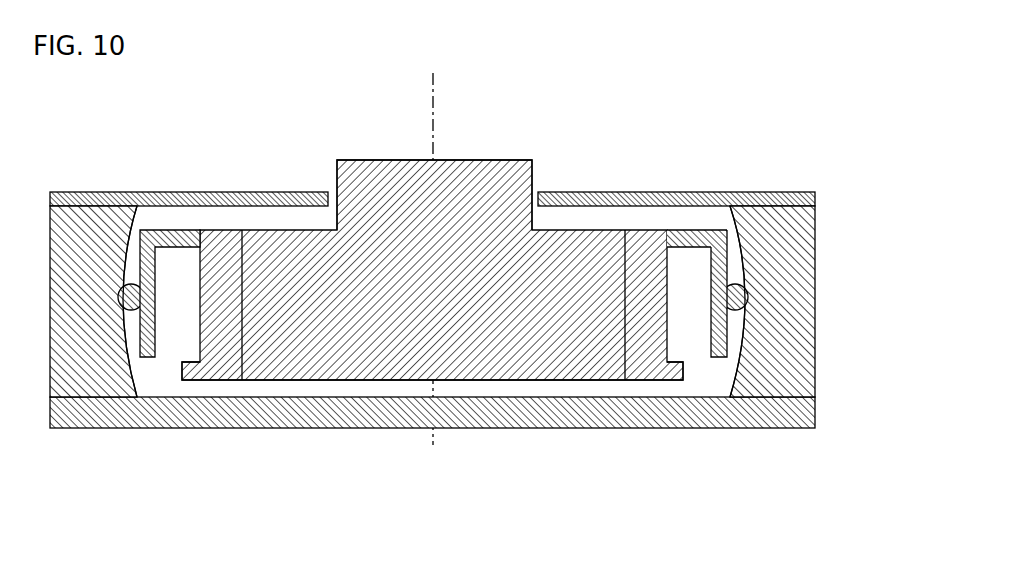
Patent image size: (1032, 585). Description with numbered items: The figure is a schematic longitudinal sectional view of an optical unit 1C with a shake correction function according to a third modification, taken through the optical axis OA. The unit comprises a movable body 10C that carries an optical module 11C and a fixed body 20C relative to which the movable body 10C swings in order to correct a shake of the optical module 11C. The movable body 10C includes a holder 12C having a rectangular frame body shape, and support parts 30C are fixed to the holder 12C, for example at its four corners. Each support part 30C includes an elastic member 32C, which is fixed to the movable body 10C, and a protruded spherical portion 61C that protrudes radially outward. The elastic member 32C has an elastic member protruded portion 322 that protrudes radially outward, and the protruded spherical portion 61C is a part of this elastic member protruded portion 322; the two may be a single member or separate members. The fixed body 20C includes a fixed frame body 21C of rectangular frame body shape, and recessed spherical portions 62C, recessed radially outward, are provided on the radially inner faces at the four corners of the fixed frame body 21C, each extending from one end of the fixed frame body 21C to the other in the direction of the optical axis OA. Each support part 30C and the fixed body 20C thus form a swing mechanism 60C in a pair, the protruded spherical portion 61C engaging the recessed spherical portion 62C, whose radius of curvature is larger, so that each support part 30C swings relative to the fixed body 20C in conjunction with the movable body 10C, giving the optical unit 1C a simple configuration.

The optical axis OA is at (437, 92).
The optical unit with a shake correction function 1C is at (758, 139).
The movable body 10C is at (534, 157).
The optical module 11C is at (403, 185).
The holder 12C is at (643, 362).
The fixed body 20C is at (825, 231).
The fixed frame body 21C is at (815, 333).
The support part 30C is at (701, 228).
The elastic member 32C is at (678, 231).
The elastic member protruded portion 322 is at (727, 305).
The swing mechanism 60C is at (738, 262).
The protruded spherical portion 61C is at (752, 274).
The recessed spherical portion 62C is at (733, 372).